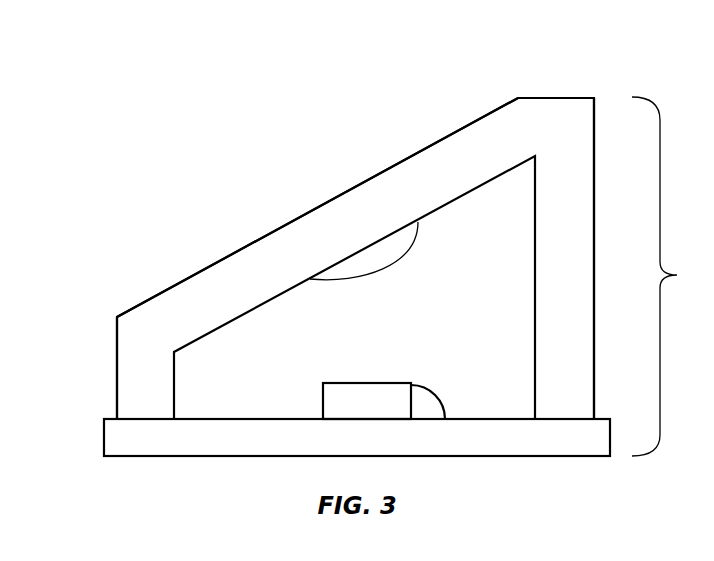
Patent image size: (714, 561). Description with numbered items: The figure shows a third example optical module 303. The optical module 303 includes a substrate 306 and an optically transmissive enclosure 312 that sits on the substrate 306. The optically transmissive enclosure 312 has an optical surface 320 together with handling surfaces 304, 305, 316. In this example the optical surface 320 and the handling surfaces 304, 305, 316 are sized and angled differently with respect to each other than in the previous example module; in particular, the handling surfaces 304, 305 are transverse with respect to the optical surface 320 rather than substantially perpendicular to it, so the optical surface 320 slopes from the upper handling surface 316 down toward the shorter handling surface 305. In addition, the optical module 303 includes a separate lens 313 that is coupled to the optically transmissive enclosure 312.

The optical module 303 is at (673, 276).
The handling surface 304 is at (594, 271).
The handling surface 305 is at (117, 377).
The substrate 306 is at (477, 418).
The optically transmissive enclosure 312 is at (97, 343).
The lens 313 is at (387, 268).
The handling surface 316 is at (562, 97).
The optical surface 320 is at (280, 227).